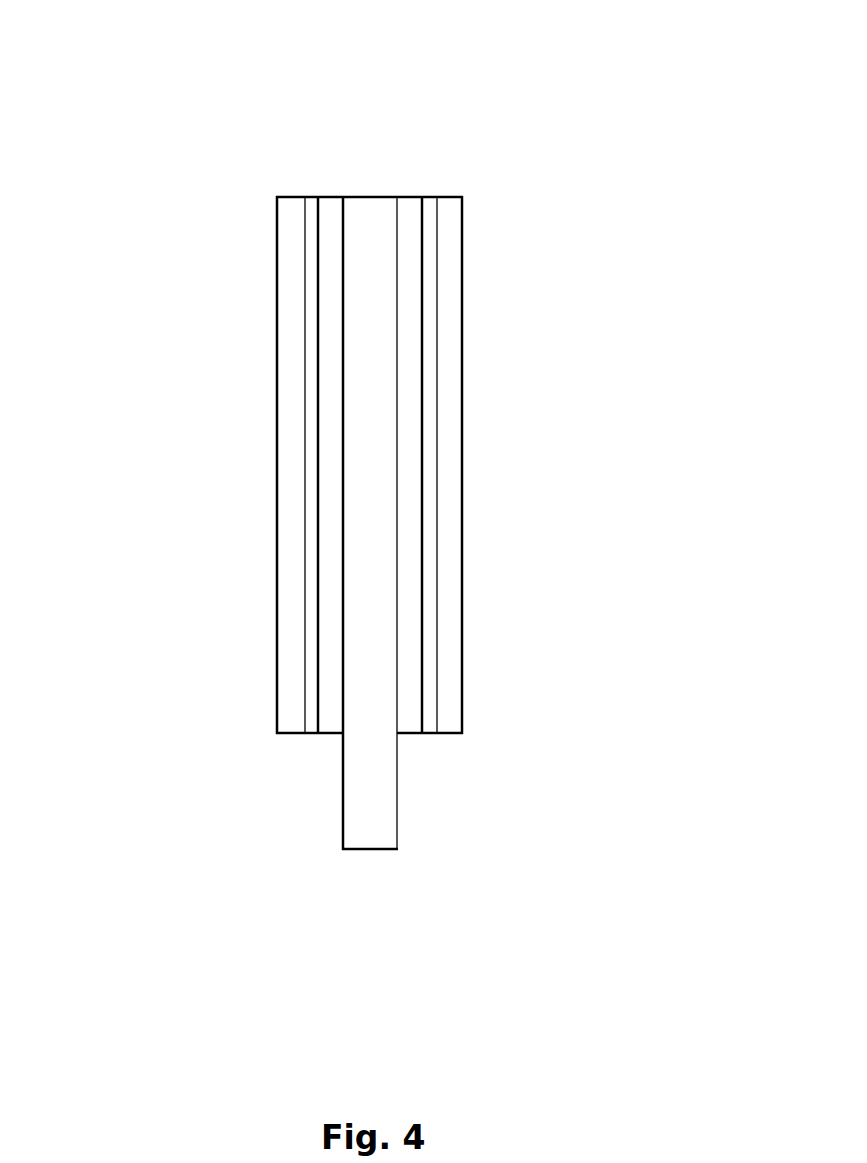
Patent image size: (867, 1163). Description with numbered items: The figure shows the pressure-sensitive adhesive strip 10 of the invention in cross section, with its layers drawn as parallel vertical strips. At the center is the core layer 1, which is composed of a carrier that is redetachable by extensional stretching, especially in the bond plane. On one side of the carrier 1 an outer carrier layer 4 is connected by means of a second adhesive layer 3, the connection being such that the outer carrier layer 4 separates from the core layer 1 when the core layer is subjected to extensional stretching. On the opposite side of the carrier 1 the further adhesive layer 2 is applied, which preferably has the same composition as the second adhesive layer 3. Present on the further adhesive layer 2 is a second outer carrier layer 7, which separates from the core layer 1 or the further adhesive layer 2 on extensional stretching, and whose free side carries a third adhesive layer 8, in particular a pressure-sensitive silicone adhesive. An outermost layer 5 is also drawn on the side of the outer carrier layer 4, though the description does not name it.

The pressure-sensitive adhesive strip 10 is at (188, 157).
The core layer 1 is at (381, 764).
The further adhesive layer 2 is at (413, 714).
The second adhesive layer 3 is at (338, 310).
The outer carrier layer 4 is at (313, 573).
The outer layer 5 is at (292, 416).
The second outer carrier layer 7 is at (429, 353).
The third adhesive layer 8 is at (453, 457).